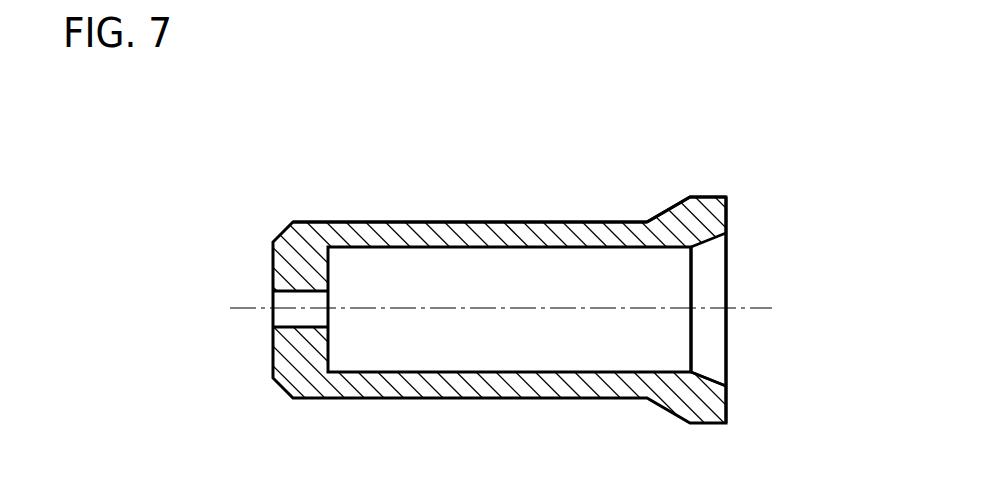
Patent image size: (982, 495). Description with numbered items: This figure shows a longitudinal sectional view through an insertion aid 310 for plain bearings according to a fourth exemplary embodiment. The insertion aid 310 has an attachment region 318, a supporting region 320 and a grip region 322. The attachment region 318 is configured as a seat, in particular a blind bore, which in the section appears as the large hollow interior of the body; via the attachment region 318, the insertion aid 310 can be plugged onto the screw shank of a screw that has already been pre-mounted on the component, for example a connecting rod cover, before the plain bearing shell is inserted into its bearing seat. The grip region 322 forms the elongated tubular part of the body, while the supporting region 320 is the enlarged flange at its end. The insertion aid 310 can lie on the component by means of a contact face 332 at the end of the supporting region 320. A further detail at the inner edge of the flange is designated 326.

The insertion aid 310 is at (530, 115).
The attachment region 318 is at (670, 250).
The supporting region 320 is at (708, 195).
The grip region 322 is at (412, 222).
The inner chamfer surface 326 is at (700, 373).
The contact face 332 is at (730, 210).